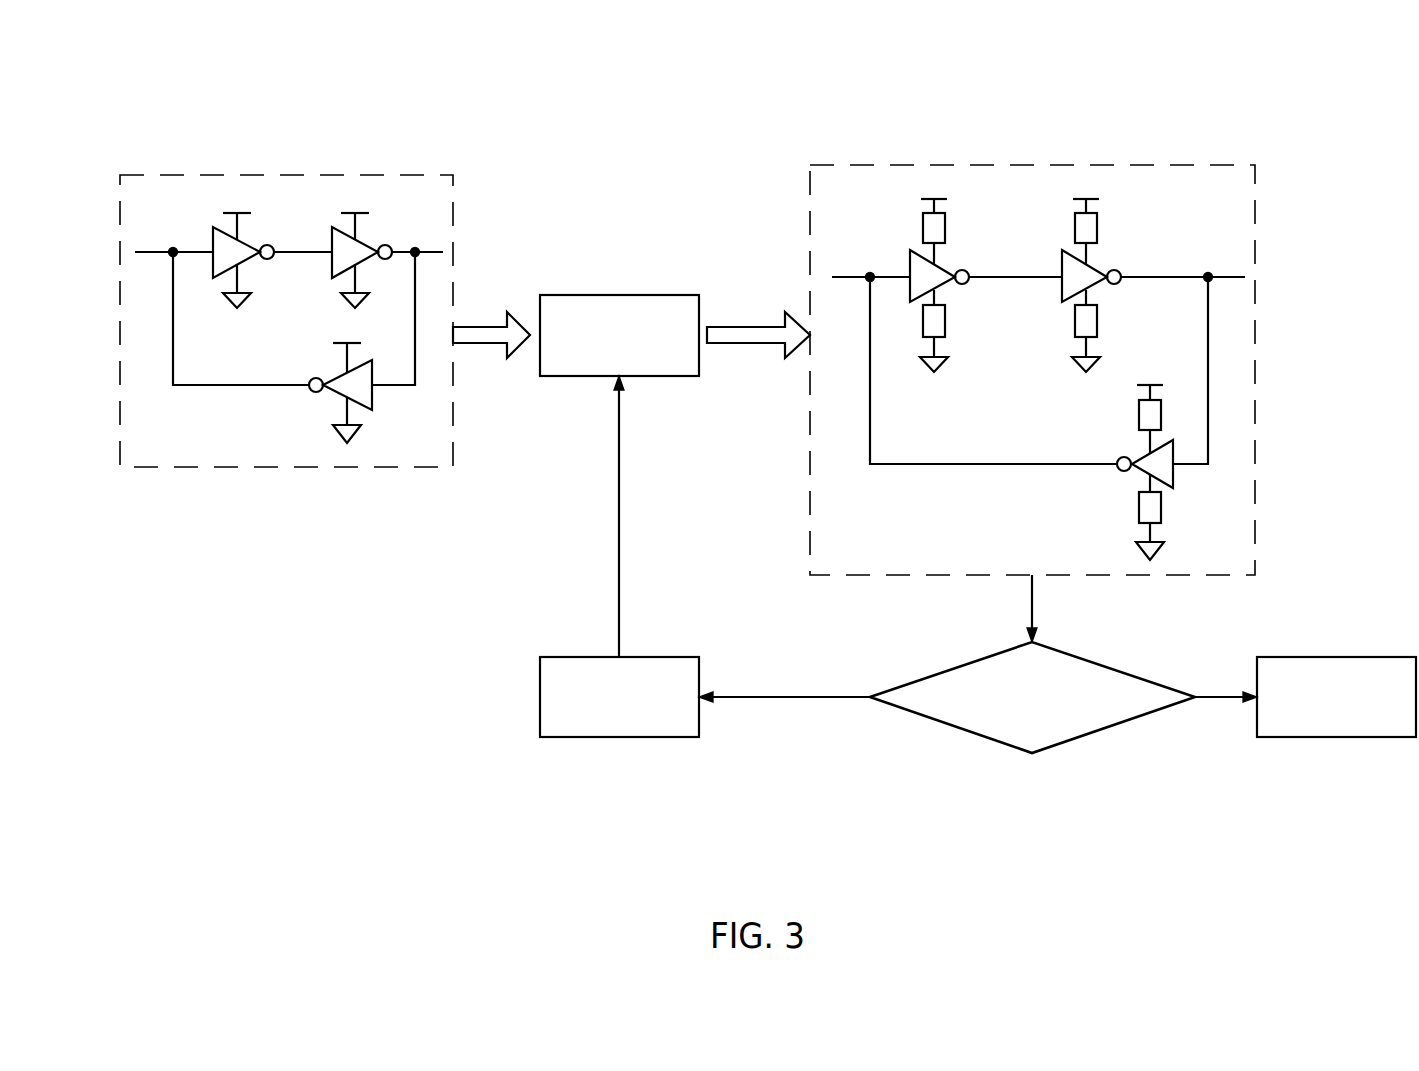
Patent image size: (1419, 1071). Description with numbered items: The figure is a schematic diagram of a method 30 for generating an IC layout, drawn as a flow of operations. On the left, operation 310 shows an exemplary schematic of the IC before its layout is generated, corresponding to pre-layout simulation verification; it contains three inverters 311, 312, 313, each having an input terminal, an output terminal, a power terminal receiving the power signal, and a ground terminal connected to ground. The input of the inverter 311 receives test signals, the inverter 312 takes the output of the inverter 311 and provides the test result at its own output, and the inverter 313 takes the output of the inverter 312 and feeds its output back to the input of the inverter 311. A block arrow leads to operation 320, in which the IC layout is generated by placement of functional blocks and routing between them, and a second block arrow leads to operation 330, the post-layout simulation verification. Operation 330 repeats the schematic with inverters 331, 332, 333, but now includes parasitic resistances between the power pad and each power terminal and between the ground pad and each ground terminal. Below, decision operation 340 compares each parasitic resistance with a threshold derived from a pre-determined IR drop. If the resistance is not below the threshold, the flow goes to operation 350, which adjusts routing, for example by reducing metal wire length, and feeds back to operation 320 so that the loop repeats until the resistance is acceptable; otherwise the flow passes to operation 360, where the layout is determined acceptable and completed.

The method 30 is at (153, 80).
The operation 310 is at (285, 175).
The inverter 311 is at (213, 240).
The inverter 312 is at (332, 240).
The inverter 313 is at (336, 377).
The operation 320 is at (617, 295).
The operation 330 is at (975, 165).
The inverter 331 is at (910, 268).
The inverter 332 is at (1062, 268).
The inverter 333 is at (1132, 452).
The operation 340 is at (948, 668).
The operation 350 is at (540, 697).
The operation 360 is at (1338, 657).